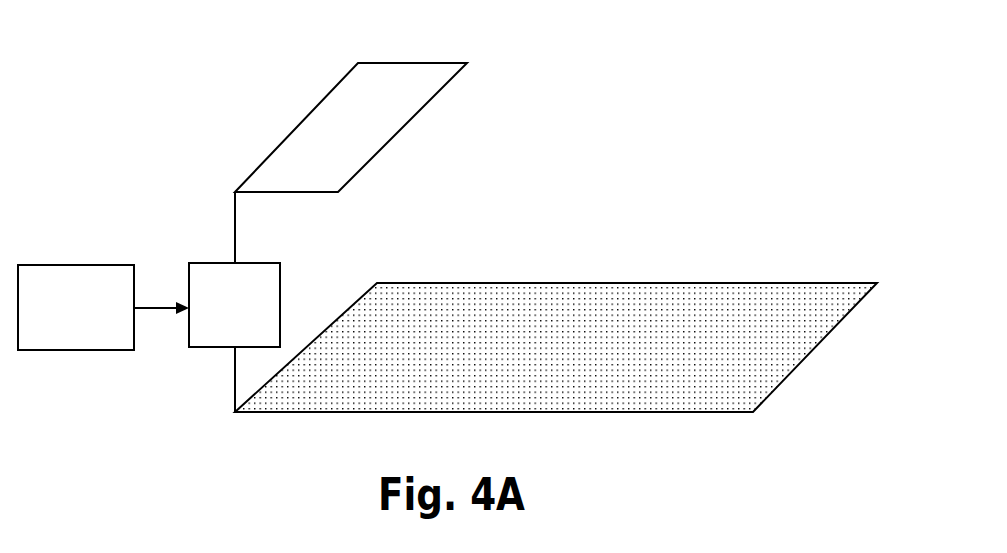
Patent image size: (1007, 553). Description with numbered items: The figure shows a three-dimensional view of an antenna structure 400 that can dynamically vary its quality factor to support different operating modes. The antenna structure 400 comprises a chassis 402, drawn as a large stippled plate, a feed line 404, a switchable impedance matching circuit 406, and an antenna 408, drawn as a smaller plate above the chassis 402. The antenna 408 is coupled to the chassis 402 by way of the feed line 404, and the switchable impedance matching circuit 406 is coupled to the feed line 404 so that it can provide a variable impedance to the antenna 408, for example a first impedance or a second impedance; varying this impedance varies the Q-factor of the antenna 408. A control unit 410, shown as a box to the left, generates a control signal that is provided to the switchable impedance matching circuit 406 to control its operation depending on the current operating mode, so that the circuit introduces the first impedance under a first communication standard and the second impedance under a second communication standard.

The antenna structure 400 is at (76, 36).
The chassis 402 is at (837, 283).
The feed line 404 is at (235, 387).
The switchable impedance matching circuit 406 is at (254, 328).
The antenna 408 is at (433, 63).
The control unit 410 is at (57, 345).